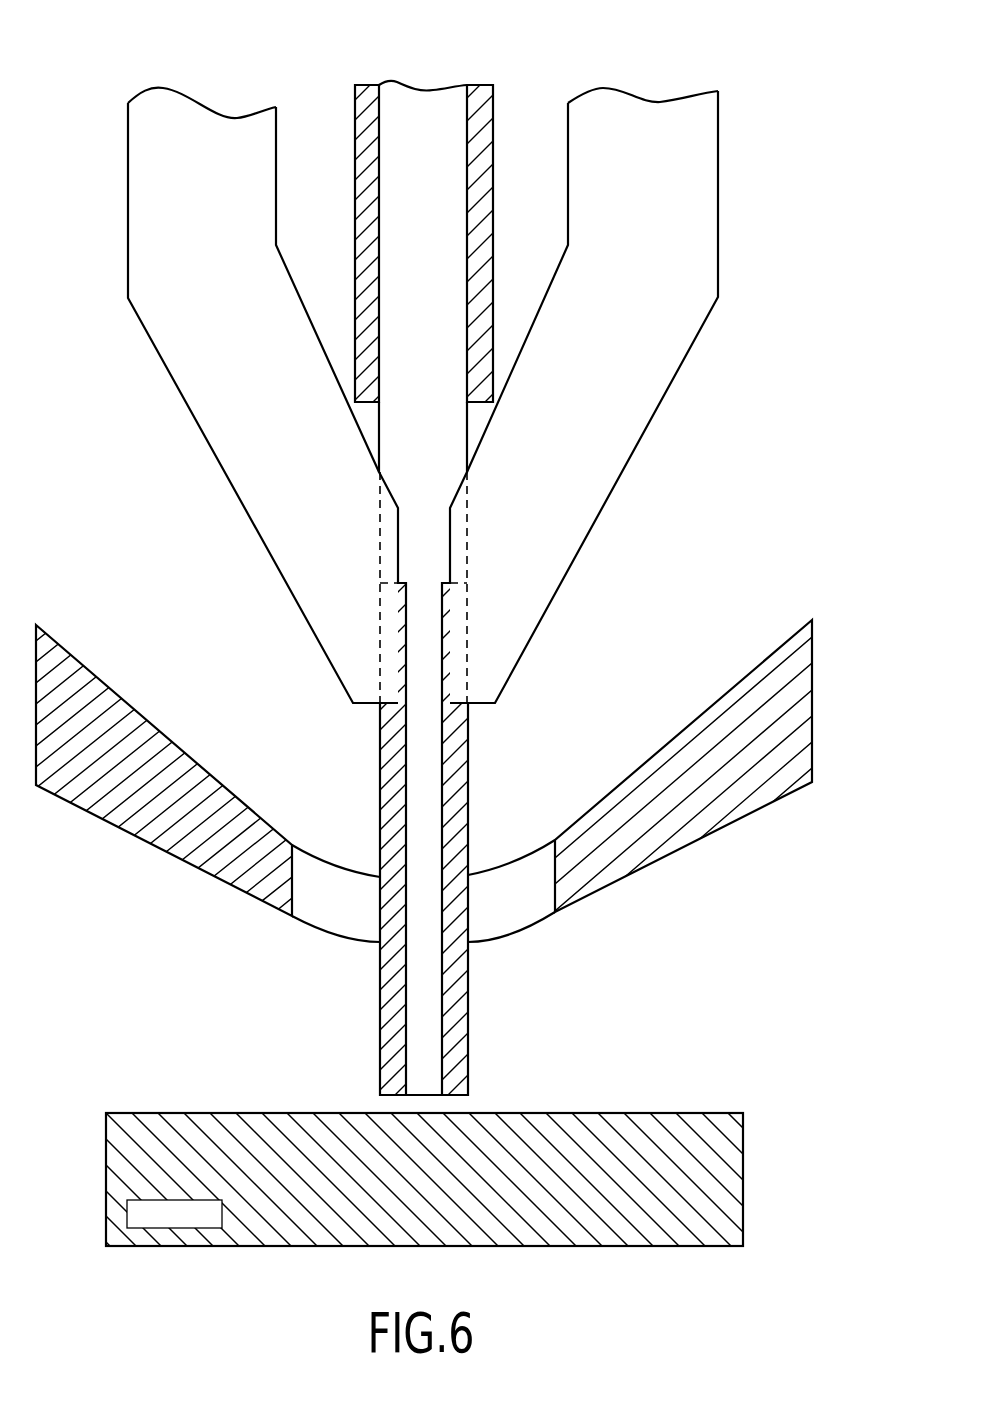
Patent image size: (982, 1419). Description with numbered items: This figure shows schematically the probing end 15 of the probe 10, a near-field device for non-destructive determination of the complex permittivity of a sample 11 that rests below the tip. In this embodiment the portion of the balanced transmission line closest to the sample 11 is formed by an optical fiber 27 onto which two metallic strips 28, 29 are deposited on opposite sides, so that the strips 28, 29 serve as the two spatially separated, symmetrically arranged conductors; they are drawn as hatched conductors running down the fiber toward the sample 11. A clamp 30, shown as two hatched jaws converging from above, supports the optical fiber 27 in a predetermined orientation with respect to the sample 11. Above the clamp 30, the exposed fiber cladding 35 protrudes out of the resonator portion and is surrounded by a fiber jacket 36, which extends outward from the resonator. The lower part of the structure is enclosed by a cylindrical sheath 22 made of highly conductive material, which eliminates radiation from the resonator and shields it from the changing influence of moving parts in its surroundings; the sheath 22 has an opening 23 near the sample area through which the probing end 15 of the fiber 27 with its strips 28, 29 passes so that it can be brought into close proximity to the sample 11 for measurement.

The probe 10 is at (750, 52).
The sample 11 is at (743, 1190).
The probing end 15 is at (270, 942).
The cylindrical sheath 22 is at (788, 692).
The opening 23 is at (517, 912).
The optical fiber 27 is at (423, 538).
The metallic strip 28 is at (453, 782).
The metallic strip 29 is at (392, 773).
The clamp 30 is at (158, 226).
The fiber cladding 35 is at (468, 427).
The fiber jacket 36 is at (480, 113).